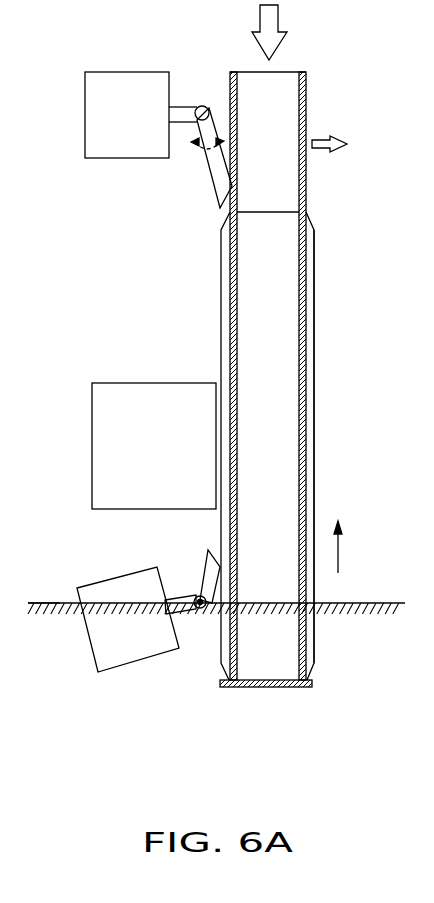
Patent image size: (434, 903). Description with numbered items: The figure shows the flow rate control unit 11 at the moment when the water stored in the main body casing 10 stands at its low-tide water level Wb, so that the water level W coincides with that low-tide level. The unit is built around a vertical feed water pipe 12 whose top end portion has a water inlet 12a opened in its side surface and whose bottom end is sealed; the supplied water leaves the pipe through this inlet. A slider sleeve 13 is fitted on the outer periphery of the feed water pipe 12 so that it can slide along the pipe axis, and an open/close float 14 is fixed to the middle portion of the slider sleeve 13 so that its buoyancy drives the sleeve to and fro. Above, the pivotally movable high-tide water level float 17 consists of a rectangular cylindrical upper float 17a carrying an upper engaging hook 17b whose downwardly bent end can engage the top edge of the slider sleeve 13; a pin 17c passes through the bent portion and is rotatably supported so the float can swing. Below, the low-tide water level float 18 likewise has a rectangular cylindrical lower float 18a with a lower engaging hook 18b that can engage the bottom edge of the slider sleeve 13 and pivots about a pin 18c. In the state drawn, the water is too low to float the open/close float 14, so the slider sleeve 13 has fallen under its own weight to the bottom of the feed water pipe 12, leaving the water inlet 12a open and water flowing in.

The main body casing 10 is at (77, 268).
The flow rate control unit 11 is at (216, 258).
The feed water pipe 12 is at (314, 89).
The water inlet 12a is at (306, 138).
The slider sleeve 13 is at (315, 435).
The open/close float 14 is at (92, 430).
The high-tide water level float 17 is at (168, 113).
The upper float 17a is at (130, 150).
The upper engaging hook 17b is at (185, 106).
The pin 17c is at (212, 107).
The low-tide water level float 18 is at (146, 626).
The lower float 18a is at (110, 672).
The lower engaging hook 18b is at (205, 570).
The pin 18c is at (200, 610).
The water level W is at (384, 603).
The low-tide water level Wb is at (38, 603).